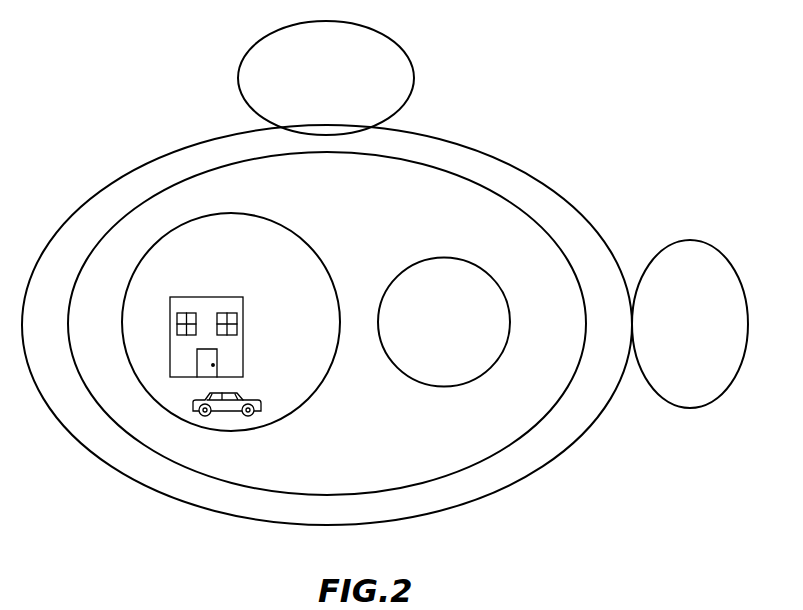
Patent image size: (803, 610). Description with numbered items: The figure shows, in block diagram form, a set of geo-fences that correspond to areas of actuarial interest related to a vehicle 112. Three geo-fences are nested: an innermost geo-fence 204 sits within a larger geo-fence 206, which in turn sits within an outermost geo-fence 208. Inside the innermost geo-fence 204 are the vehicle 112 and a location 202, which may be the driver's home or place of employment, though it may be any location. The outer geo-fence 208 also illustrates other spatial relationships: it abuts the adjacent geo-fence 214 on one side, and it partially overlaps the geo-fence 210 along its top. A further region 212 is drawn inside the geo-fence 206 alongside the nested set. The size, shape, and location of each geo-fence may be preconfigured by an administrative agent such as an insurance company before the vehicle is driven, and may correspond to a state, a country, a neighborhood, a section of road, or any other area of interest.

The geo-fence 208 is at (458, 140).
The geo-fence 206 is at (492, 187).
The geo-fence 204 is at (270, 213).
The coverage region 212 is at (428, 257).
The geo-fence 210 is at (397, 40).
The geo-fence 214 is at (693, 240).
The location 202 is at (209, 297).
The vehicle 112 is at (253, 397).